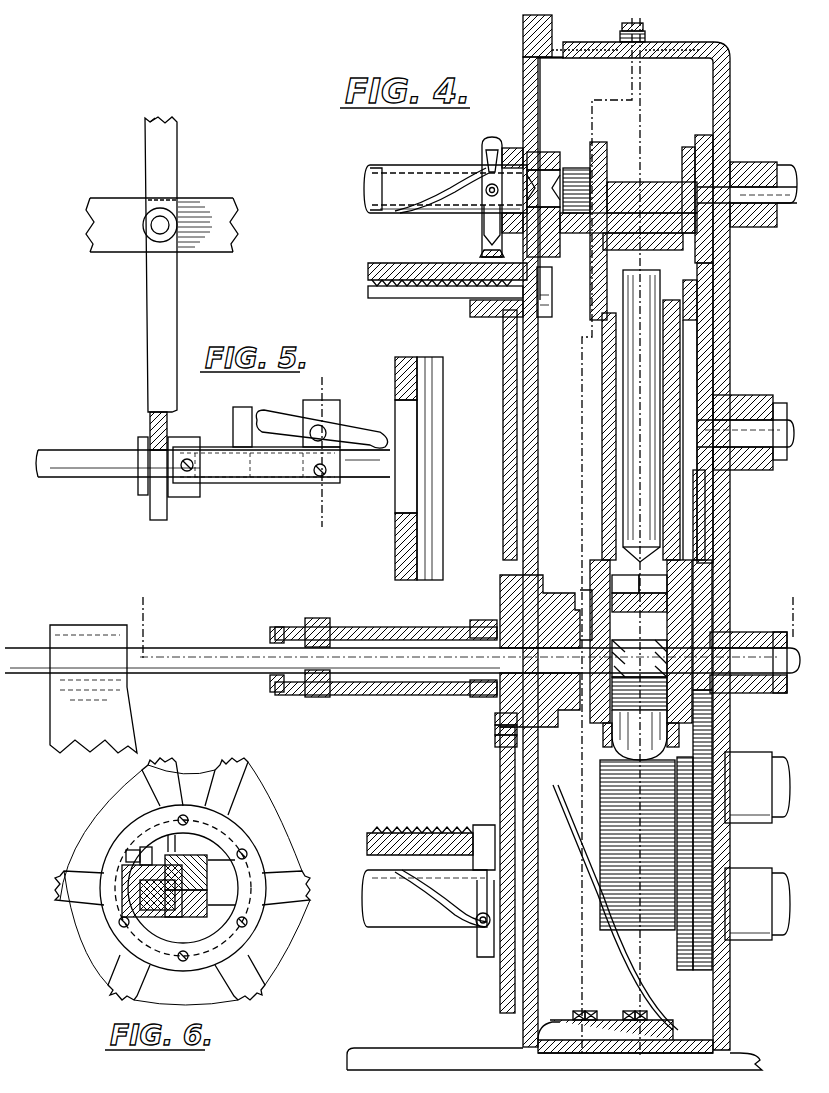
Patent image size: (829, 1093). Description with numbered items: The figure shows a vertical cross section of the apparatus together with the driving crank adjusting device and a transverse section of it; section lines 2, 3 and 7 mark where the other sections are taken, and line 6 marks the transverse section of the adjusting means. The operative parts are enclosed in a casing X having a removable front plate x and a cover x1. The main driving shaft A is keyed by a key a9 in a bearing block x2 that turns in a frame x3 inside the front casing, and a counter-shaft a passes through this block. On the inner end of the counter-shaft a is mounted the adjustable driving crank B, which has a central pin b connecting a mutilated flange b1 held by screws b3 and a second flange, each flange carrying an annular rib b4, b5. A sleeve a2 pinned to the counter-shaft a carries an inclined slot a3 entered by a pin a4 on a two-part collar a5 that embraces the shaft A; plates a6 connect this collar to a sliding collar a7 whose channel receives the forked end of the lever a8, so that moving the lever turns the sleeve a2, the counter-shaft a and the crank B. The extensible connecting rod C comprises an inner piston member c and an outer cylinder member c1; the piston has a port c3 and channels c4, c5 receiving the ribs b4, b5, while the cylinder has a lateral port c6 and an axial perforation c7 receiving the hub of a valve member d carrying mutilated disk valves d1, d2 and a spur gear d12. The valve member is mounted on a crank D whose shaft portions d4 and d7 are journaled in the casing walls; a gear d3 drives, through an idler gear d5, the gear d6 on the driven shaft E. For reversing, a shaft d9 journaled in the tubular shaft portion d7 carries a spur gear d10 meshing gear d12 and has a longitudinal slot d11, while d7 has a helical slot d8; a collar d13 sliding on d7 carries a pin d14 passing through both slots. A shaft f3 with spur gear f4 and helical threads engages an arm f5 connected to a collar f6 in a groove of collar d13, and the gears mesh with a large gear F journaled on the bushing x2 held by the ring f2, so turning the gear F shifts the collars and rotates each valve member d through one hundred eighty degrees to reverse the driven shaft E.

In FIG. 4, the section line 2- 2 is at (603, 535).
In FIG. 4, the section line 3- 3 is at (641, 535).
In FIG. 4, the removable front plate x is at (730, 80).
In FIG. 4, the cover x1 is at (667, 44).
In FIG. 4, the bearing block x2 is at (495, 727).
In FIG. 4, the frame x3 is at (495, 740).
In FIG. 4, the collar f6 is at (490, 137).
In FIG. 4, the longitudinal slot d11 is at (407, 172).
In FIG. 4, the tubular shaft portion d7 is at (437, 165).
In FIG. 4, the pin d14 is at (485, 165).
In FIG. 4, the collar d13 is at (497, 160).
In FIG. 4, the shaft d9 is at (547, 180).
In FIG. 4, the spur gear d10 is at (575, 170).
In FIG. 4, the mutilated disk valve d2 is at (606, 168).
In FIG. 4, the mutilated disk valve d1 is at (685, 172).
In FIG. 4, the valve member d is at (702, 188).
In FIG. 4, the axial perforation c7 is at (664, 205).
In FIG. 4, the gear d3 is at (724, 145).
In FIG. 4, the shaft portion d4 is at (760, 186).
In FIG. 4, the helical slot d8 is at (416, 213).
In FIG. 4, the arm f5 is at (480, 252).
In FIG. 4, the spur gear d12 is at (578, 238).
In FIG. 4, the crank D is at (647, 179).
In FIG. 4, the shaft f3 is at (447, 300).
In FIG. 4, the spur gear f4 is at (547, 310).
In FIG. 4, the lateral port c6 is at (700, 292).
In FIG. 4, the idler gear d5 is at (705, 333).
In FIG. 4, the cylinder member c1 is at (605, 360).
In FIG. 4, the piston member c is at (641, 416).
In FIG. 4, the extensible connecting rod C is at (675, 378).
In FIG. 4, the large gear F is at (505, 482).
In FIG. 5, the large gear F is at (392, 557).
In FIG. 4, the flange b1 is at (706, 503).
In FIG. 4, the port c3 is at (670, 525).
In FIG. 4, the screws b3 is at (723, 615).
In FIG. 4, the adjustable driving crank B is at (670, 641).
In FIG. 4, the channel c4 is at (625, 581).
In FIG. 4, the channel c5 is at (653, 581).
In FIG. 4, the gear d6 is at (707, 626).
In FIG. 4, the section line 7- 7 is at (467, 621).
In FIG. 4, the central pin b is at (582, 592).
In FIG. 4, the annular rib b4 is at (639, 658).
In FIG. 4, the annular rib b5 is at (656, 658).
In FIG. 4, the key a9 is at (508, 640).
In FIG. 4, the plates a6 is at (365, 636).
In FIG. 5, the plates a6 is at (292, 482).
In FIG. 6, the plates a6 is at (205, 858).
In FIG. 4, the sliding collar a7 is at (308, 697).
In FIG. 5, the sliding collar a7 is at (178, 440).
In FIG. 4, the ring f2 is at (495, 720).
In FIG. 4, the driven shaft E is at (748, 676).
In FIG. 4, the driving shaft A is at (230, 655).
In FIG. 5, the driving shaft A is at (83, 456).
In FIG. 6, the driving shaft A is at (240, 915).
In FIG. 5, the lever a8 is at (170, 292).
In FIG. 5, the slot a3 is at (280, 420).
In FIG. 5, the section line 6- 6 is at (322, 453).
In FIG. 5, the pin a4 is at (330, 430).
In FIG. 6, the pin a4 is at (172, 850).
In FIG. 5, the collar a5 is at (360, 462).
In FIG. 6, the collar a5 is at (210, 877).
In FIG. 5, the counter-shaft a is at (368, 460).
In FIG. 6, the counter-shaft a is at (140, 892).
In FIG. 5, the sleeve a2 is at (384, 455).
In FIG. 6, the sleeve a2 is at (150, 865).